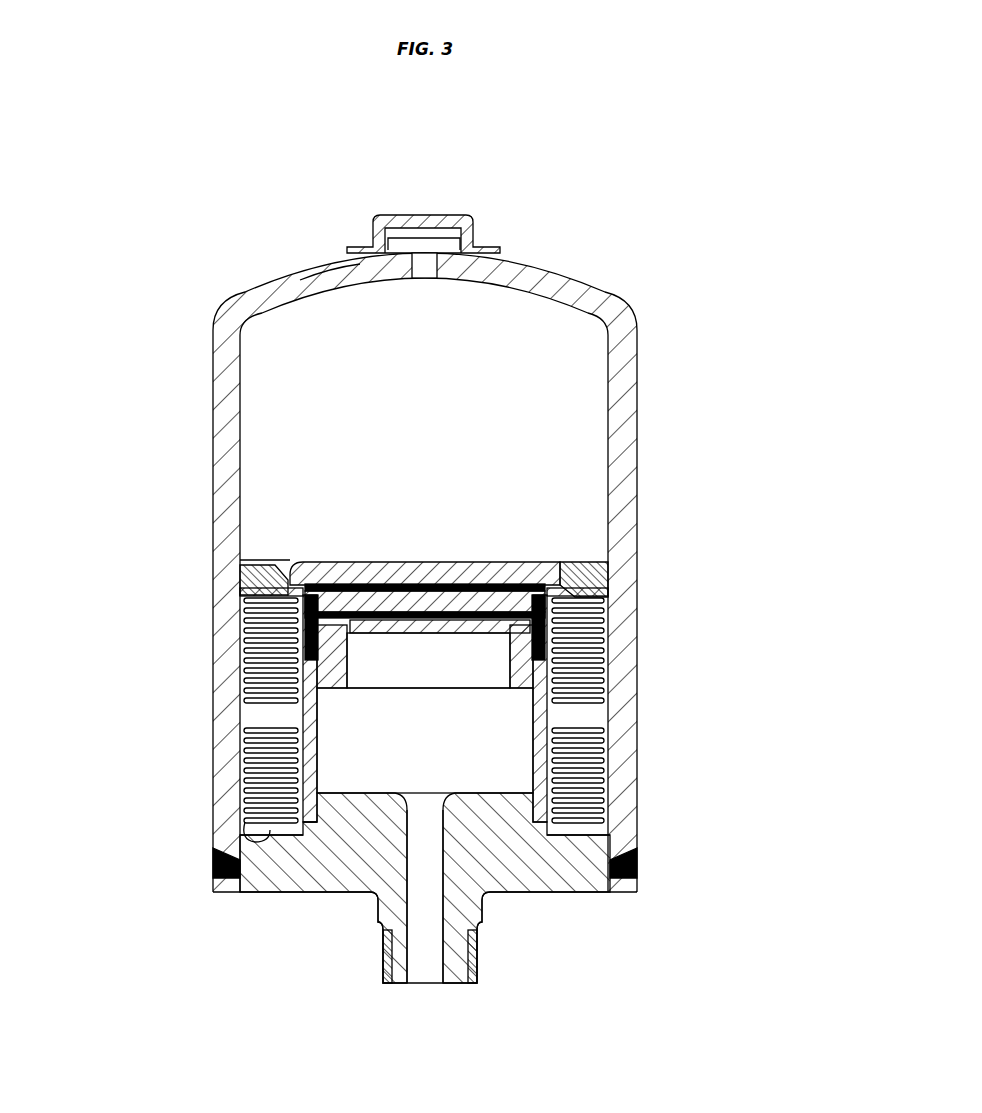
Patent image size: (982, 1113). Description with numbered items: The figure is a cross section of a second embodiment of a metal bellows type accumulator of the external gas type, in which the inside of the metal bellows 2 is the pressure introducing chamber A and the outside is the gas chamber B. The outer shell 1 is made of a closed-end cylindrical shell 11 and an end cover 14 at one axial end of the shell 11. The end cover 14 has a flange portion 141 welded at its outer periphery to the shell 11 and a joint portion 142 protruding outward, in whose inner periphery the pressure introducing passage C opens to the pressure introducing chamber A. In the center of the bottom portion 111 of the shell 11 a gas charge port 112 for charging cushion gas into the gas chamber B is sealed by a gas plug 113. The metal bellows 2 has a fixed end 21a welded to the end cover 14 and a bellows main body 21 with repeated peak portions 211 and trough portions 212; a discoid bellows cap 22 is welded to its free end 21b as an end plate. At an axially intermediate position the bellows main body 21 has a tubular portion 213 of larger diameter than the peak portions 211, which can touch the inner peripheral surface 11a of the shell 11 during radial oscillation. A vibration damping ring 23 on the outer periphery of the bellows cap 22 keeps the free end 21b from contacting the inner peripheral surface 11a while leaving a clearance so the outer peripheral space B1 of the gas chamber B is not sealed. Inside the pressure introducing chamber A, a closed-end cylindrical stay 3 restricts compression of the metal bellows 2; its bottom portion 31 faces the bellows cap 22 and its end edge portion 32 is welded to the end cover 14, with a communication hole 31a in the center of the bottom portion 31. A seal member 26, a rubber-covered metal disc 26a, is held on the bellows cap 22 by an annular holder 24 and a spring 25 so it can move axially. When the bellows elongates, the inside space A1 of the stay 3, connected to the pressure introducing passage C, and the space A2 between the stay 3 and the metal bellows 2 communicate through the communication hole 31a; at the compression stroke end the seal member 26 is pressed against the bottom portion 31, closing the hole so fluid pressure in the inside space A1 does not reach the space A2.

The outer shell 1 is at (222, 265).
The shell 11 is at (213, 487).
The inner peripheral surface 11a is at (240, 560).
The bottom portion 111 is at (308, 272).
The gas charge port 112 is at (425, 268).
The gas plug 113 is at (435, 245).
The end cover 14 is at (425, 926).
The flange portion 141 is at (300, 893).
The joint portion 142 is at (490, 965).
The metal bellows 2 is at (424, 726).
The bellows main body 21 is at (424, 726).
The fixed end 21a is at (243, 843).
The free end 21b is at (288, 578).
The peak portions 211 is at (240, 772).
The trough portions 212 is at (307, 770).
The tubular portion 213 is at (610, 712).
The bellows cap 22 is at (475, 577).
The vibration damping ring 23 is at (608, 580).
The holder 24 is at (320, 677).
The spring 25 is at (352, 648).
The seal member 26 is at (502, 630).
The disc 26a is at (505, 595).
The stay 3 is at (295, 712).
The bottom portion 31 is at (370, 595).
The communication hole 31a is at (425, 612).
The end edge portion 32 is at (265, 860).
The pressure introducing chamber A is at (668, 935).
The inside space A1 is at (495, 768).
The space A2 is at (560, 713).
The gas chamber B is at (538, 362).
The outer peripheral space B1 is at (240, 652).
The pressure introducing passage C is at (435, 955).